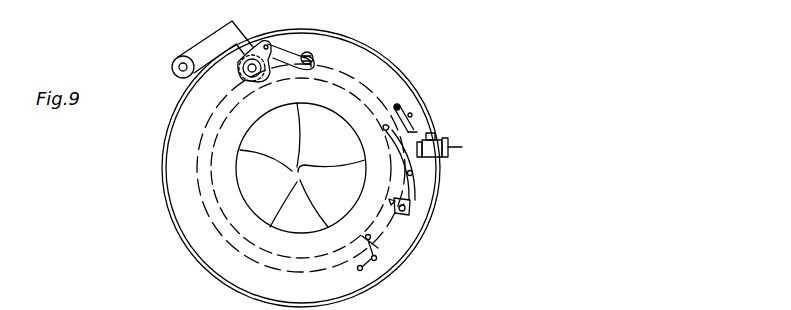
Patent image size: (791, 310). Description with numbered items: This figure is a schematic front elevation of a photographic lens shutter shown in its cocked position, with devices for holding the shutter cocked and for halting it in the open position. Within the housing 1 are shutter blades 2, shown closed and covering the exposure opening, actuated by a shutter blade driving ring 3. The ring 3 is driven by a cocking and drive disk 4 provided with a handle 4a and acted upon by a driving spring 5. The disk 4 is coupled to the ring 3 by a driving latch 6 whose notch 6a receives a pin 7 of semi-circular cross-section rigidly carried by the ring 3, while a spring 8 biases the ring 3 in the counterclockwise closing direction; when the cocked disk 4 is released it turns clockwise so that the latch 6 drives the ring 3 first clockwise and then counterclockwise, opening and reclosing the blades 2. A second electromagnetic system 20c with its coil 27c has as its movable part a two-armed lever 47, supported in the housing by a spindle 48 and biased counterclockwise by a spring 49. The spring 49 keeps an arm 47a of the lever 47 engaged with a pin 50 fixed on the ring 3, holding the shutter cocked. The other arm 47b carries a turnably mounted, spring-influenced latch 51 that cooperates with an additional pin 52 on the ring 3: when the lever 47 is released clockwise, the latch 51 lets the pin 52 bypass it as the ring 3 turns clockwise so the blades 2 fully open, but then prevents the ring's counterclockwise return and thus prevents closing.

The housing 1 is at (187, 248).
The shutter blades 2 is at (313, 120).
The shutter blade driving ring 3 is at (205, 188).
The cocking and drive disk 4 is at (252, 43).
The handle 4a is at (212, 45).
The driving spring 5 is at (238, 68).
The driving latch 6 is at (278, 53).
The notch 6a is at (315, 65).
The pin 7 is at (306, 52).
The spring 8 is at (379, 253).
The second electromagnetic system 20c is at (457, 137).
The coil 27c is at (462, 147).
The two-armed lever 47 is at (413, 187).
The arm 47a is at (403, 132).
The other arm 47b is at (408, 201).
The spindle 48 is at (414, 175).
The spring 49 is at (399, 107).
The pin 50 is at (386, 126).
The latch 51 is at (403, 212).
The additional pin 52 is at (389, 203).